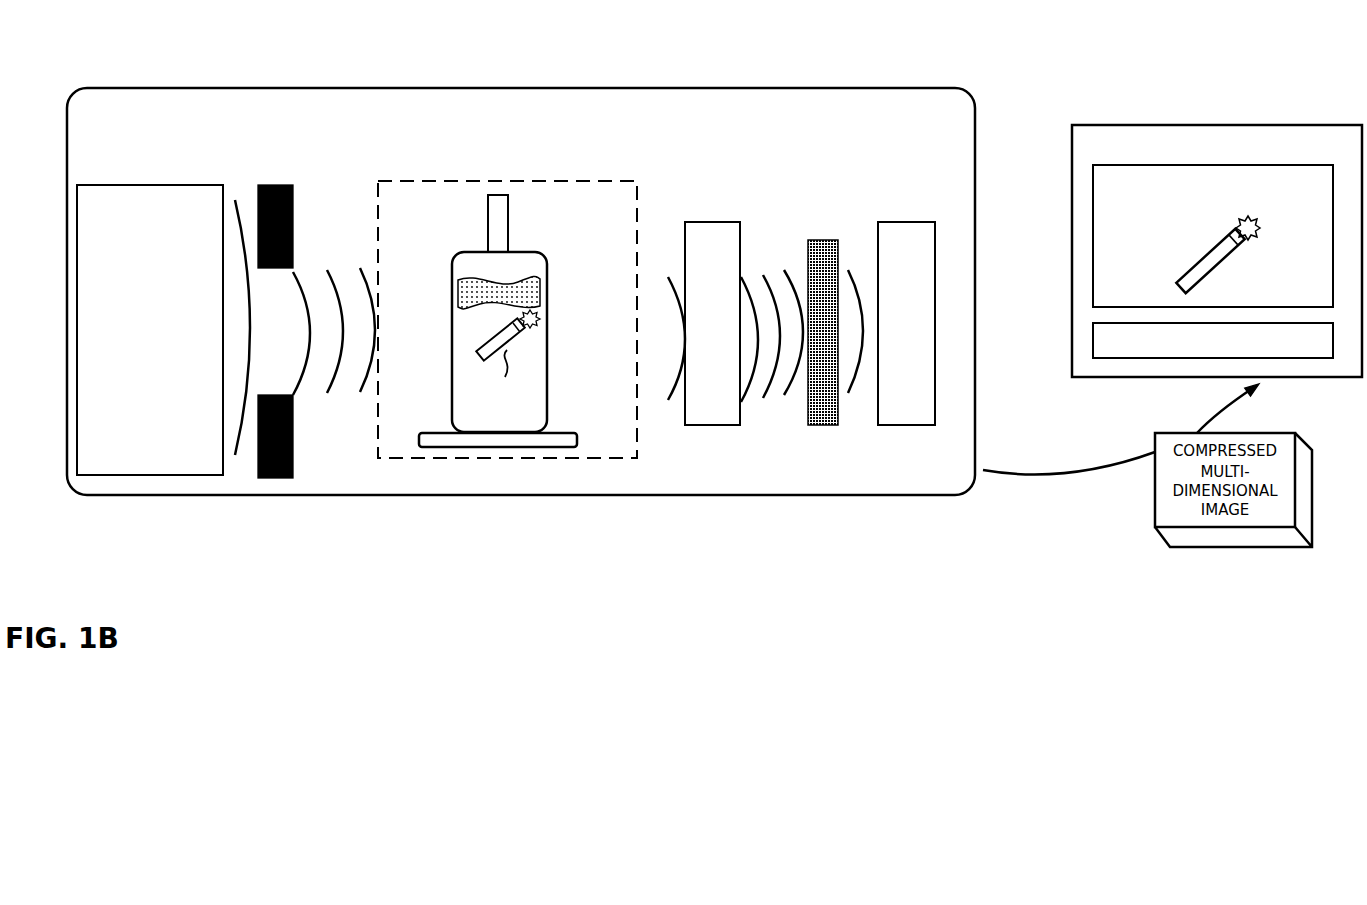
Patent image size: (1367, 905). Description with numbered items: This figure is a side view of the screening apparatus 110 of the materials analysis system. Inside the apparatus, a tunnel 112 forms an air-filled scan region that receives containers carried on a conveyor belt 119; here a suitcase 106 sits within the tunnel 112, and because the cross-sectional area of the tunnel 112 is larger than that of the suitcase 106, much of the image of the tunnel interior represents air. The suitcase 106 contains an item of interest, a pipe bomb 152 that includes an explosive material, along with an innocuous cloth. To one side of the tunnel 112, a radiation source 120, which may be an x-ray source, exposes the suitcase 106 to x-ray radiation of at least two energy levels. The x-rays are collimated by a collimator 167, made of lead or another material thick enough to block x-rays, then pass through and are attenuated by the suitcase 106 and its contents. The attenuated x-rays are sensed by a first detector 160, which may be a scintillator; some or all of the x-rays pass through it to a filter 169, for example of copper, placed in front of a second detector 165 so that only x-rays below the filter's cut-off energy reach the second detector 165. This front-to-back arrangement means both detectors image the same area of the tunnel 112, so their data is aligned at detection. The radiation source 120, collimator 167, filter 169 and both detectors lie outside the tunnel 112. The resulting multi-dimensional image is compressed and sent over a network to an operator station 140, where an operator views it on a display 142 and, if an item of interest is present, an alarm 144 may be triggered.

The screening apparatus 110 is at (365, 87).
The radiation source 120 is at (150, 330).
The collimator 167 is at (285, 183).
The tunnel 112 is at (572, 181).
The suitcase 106 is at (545, 292).
The pipe bomb 152 is at (508, 358).
The conveyor belt 119 is at (540, 447).
The first detector 160 is at (712, 323).
The filter 169 is at (818, 238).
The second detector 165 is at (906, 323).
The operator station 140 is at (1137, 125).
The display 142 is at (1213, 236).
The alarm 144 is at (1213, 340).